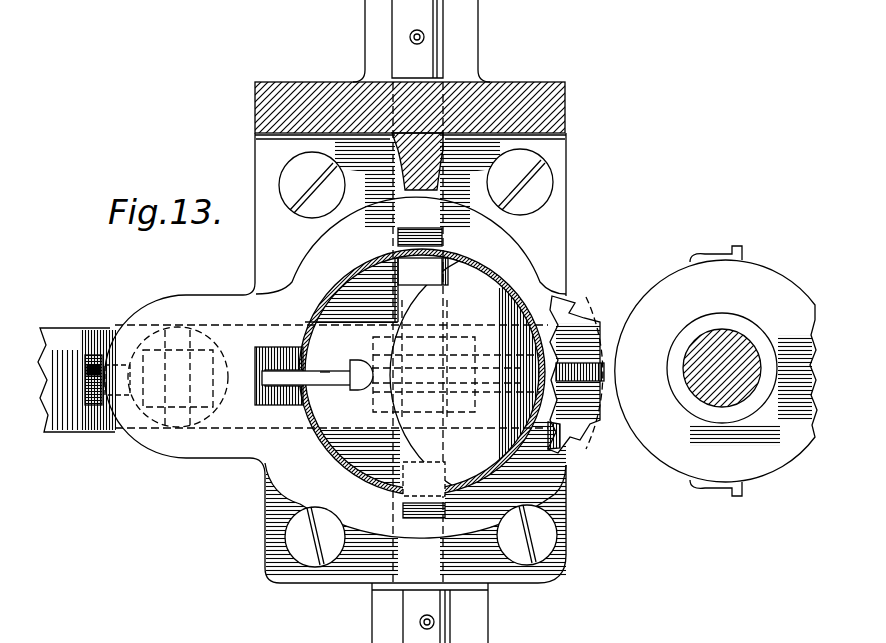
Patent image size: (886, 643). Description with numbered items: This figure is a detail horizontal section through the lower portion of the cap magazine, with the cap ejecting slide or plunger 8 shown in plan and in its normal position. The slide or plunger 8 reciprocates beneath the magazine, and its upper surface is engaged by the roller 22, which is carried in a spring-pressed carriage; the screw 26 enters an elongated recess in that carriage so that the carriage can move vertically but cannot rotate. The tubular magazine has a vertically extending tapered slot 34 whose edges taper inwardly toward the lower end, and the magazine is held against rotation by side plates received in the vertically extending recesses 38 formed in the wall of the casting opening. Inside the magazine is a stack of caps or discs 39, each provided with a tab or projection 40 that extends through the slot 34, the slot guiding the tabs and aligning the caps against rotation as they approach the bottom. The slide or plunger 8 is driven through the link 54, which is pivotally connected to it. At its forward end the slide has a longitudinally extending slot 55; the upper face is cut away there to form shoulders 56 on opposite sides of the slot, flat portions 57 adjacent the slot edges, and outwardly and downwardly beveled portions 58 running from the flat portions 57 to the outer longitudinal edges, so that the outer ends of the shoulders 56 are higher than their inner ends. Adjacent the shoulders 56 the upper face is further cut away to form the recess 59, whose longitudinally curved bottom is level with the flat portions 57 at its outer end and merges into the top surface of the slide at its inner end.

The cap or disc delivering slide or plunger 8 is at (56, 385).
The roller 22 is at (148, 452).
The screw 26 is at (98, 426).
The vertically extending tapered slot 34 is at (279, 389).
The vertically extending recesses 38 is at (433, 226).
The caps or discs 39 is at (473, 375).
The tab or projection 40 is at (358, 390).
The link 54 is at (690, 641).
The longitudinally extending slot 55 is at (322, 371).
The shoulders 56 is at (393, 352).
The flat portions 57 is at (596, 364).
The outwardly and downwardly beveled portions 58 is at (594, 406).
The recess 59 is at (353, 343).